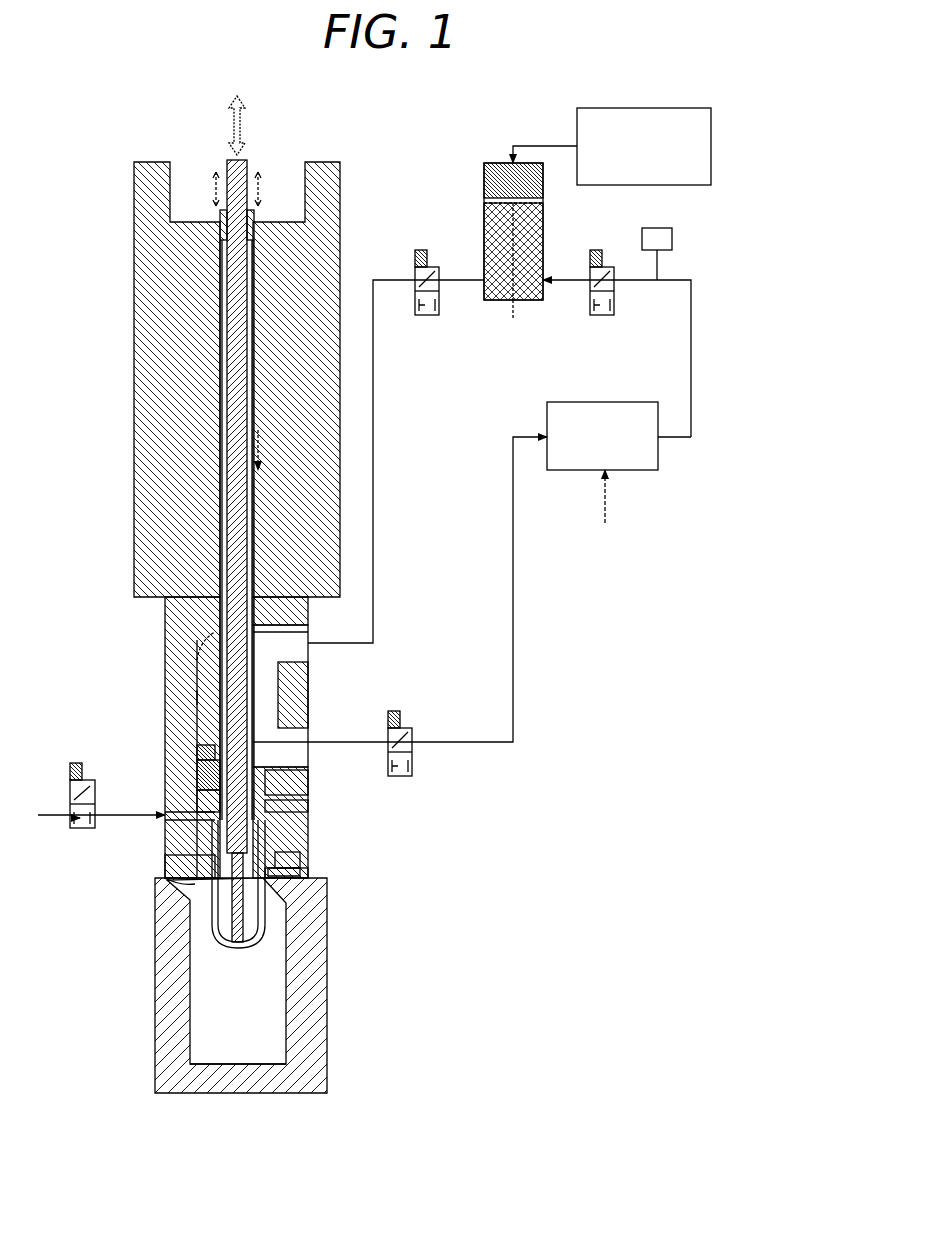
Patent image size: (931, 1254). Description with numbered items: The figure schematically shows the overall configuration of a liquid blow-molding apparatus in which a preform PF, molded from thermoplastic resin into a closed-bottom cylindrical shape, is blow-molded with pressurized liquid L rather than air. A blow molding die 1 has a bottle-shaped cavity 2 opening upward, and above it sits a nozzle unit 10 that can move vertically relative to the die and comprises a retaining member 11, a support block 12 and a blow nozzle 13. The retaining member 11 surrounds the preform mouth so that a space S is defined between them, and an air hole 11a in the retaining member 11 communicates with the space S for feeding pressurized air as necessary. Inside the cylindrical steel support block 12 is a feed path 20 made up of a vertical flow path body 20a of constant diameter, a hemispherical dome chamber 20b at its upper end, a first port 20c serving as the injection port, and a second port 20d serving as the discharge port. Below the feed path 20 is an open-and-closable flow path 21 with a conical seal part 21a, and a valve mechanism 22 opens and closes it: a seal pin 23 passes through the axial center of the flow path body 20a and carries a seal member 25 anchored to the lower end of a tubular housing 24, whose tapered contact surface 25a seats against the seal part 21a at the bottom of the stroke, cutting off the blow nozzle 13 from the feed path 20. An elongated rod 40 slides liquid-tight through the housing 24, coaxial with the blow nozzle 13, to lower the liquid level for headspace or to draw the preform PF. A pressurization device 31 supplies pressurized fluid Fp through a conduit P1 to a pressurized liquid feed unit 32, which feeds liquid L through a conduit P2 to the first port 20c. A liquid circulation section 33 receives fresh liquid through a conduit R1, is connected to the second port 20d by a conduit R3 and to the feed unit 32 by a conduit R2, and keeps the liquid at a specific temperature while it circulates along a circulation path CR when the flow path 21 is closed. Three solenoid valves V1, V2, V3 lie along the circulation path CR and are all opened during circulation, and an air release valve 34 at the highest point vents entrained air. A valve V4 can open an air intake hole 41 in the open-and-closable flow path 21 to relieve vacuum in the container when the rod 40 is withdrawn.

The nozzle unit 10 is at (107, 285).
The support block 12 is at (134, 395).
The rod 40 is at (228, 512).
The housing 24 is at (220, 462).
The seal pin 23 is at (218, 553).
The feed path 20 is at (215, 672).
The flow path body 20a is at (298, 688).
The dome chamber 20b is at (215, 630).
The first port 20c is at (300, 636).
The second port 20d is at (298, 740).
The liquid L is at (207, 697).
The seal member 25 is at (215, 748).
The open-and-closable flow path 21 is at (205, 775).
The valve mechanism 22 is at (205, 800).
The air intake hole 41 is at (165, 818).
The retaining member 11 is at (165, 865).
The air hole 11a is at (300, 860).
The space S is at (300, 872).
The blow nozzle 13 is at (188, 882).
The seal part 21a is at (302, 783).
The contact surface 25a is at (290, 806).
The preform PF is at (268, 930).
The blow molding die 1 is at (303, 1030).
The cavity 2 is at (286, 1022).
The valve V4 is at (72, 782).
The conduit P2 is at (373, 485).
The conduit R3 is at (513, 664).
The solenoid valve V3 is at (400, 778).
The conduit R2 is at (691, 352).
The solenoid valve V1 is at (602, 318).
The solenoid valve V2 is at (428, 318).
The air release valve 34 is at (672, 239).
The pressurized liquid feed unit 32 is at (490, 158).
The pressurized fluid Fp is at (484, 185).
The conduit P1 is at (545, 146).
The pressurization device 31 is at (647, 108).
The liquid circulation section 33 is at (645, 470).
The conduit R1 is at (605, 510).
The circulation path CR is at (532, 583).